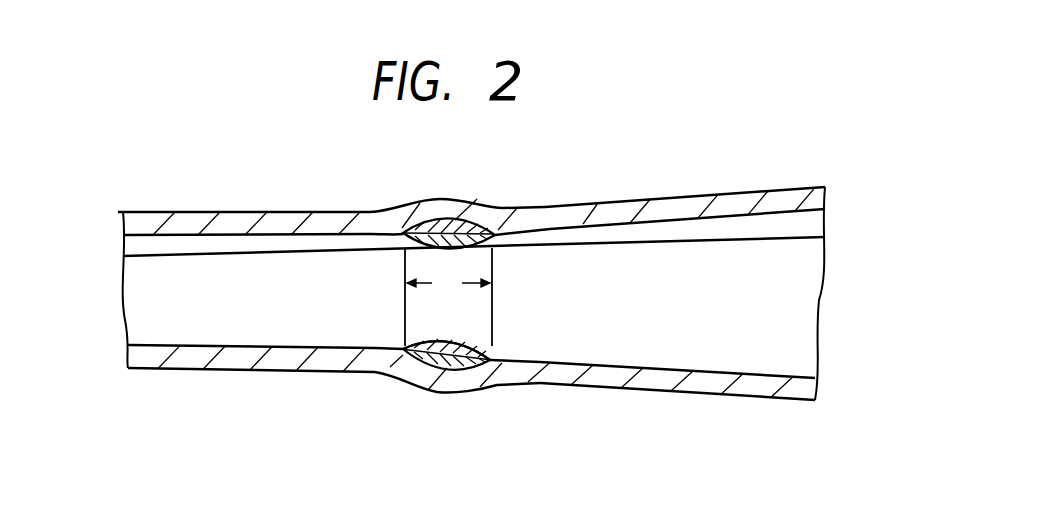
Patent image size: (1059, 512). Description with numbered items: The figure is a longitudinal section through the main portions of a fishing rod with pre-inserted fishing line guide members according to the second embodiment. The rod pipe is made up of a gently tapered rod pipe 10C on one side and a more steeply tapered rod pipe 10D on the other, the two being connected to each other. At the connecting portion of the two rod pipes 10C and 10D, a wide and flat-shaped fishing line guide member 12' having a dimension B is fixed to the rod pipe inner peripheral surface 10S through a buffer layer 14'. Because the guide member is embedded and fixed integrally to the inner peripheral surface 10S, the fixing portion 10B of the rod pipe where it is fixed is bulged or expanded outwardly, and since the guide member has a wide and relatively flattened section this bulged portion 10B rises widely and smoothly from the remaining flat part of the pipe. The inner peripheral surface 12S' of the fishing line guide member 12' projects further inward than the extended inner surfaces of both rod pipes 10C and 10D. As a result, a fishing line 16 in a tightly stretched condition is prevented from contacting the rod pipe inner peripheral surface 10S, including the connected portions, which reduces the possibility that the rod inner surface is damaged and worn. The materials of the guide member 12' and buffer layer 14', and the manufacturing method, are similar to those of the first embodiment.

The gently tapered rod pipe 10C is at (243, 220).
The fixing portion 10B is at (452, 206).
The more steeply tapered rod pipe 10D is at (638, 206).
The rod pipe inner peripheral surface 10S is at (583, 224).
The fishing line 16 is at (727, 240).
The dimension B is at (448, 297).
The buffer layer 14' is at (462, 402).
The fishing line guide member 12' is at (478, 334).
The inner peripheral surface of the fishing line guide member 12S' is at (398, 329).